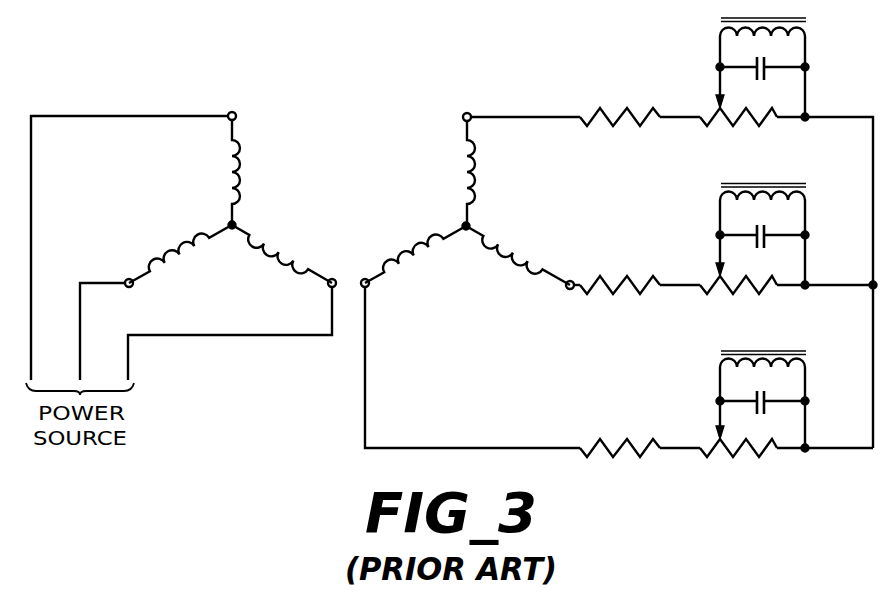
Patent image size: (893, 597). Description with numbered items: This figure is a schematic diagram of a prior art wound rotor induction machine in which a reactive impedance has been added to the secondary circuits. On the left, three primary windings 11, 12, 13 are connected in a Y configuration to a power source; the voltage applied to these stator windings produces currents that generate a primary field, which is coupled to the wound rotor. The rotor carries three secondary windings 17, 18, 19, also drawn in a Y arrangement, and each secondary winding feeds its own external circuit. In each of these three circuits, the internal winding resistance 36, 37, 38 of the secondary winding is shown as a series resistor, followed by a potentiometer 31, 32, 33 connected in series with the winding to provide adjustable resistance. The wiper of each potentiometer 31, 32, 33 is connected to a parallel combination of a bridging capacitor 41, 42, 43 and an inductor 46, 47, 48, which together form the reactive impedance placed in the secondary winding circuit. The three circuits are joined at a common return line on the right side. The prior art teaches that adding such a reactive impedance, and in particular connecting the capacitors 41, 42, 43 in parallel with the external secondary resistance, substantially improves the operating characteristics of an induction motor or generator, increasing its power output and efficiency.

The primary winding 11 is at (240, 145).
The primary winding 12 is at (172, 253).
The primary winding 13 is at (280, 257).
The secondary winding 17 is at (468, 157).
The secondary winding 18 is at (406, 253).
The secondary winding 19 is at (507, 263).
The potentiometer 31 is at (717, 112).
The potentiometer 32 is at (717, 280).
The potentiometer 33 is at (717, 443).
The internal winding resistance 36 is at (610, 104).
The internal winding resistance 37 is at (610, 274).
The internal winding resistance 38 is at (610, 438).
The bridging capacitor 41 is at (765, 77).
The bridging capacitor 42 is at (765, 245).
The bridging capacitor 43 is at (765, 410).
The inductor 46 is at (806, 30).
The inductor 47 is at (806, 196).
The inductor 48 is at (806, 361).